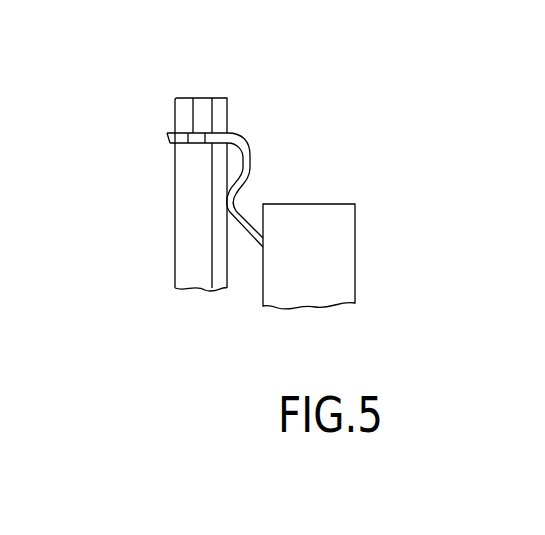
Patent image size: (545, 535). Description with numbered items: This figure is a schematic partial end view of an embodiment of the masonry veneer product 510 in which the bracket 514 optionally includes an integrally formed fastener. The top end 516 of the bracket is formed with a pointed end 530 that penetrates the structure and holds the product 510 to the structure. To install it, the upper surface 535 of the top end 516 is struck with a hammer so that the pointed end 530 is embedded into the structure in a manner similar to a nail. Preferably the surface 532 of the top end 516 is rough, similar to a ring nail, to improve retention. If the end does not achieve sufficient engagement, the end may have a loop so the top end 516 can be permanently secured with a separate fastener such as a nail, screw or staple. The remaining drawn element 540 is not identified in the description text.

The product 510 is at (392, 236).
The bracket 514 is at (178, 213).
The top end 516 is at (262, 110).
The pointed end 530 is at (167, 133).
The surface 532 is at (194, 132).
The upper surface 535 is at (253, 151).
The clip lower portion 540 is at (236, 252).